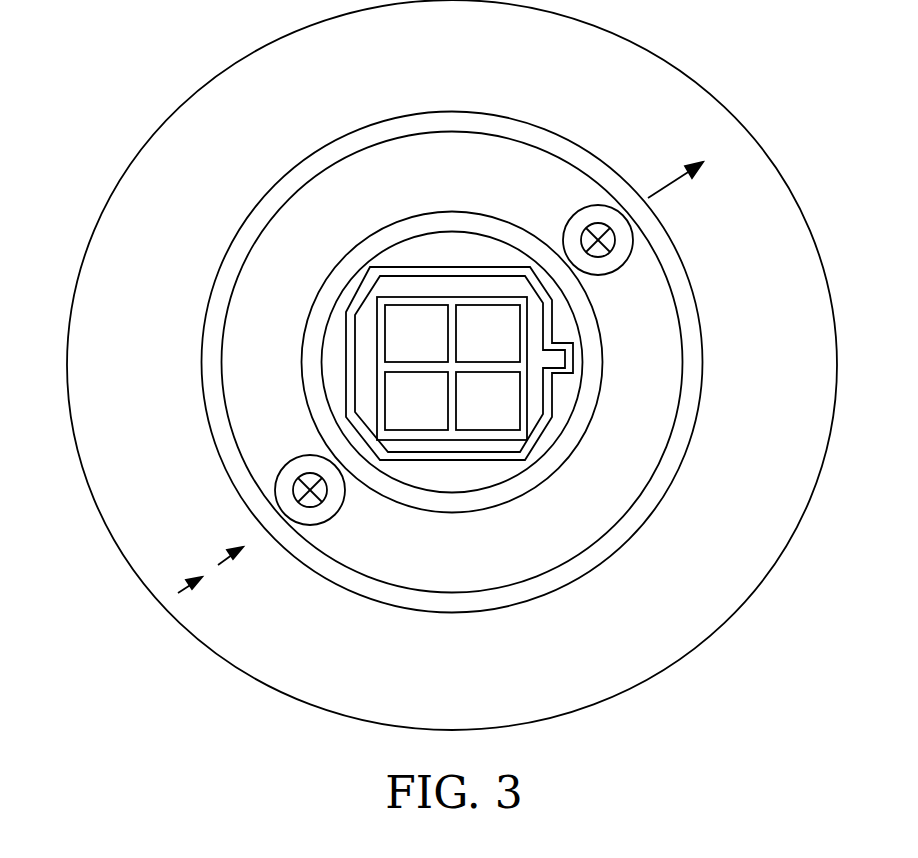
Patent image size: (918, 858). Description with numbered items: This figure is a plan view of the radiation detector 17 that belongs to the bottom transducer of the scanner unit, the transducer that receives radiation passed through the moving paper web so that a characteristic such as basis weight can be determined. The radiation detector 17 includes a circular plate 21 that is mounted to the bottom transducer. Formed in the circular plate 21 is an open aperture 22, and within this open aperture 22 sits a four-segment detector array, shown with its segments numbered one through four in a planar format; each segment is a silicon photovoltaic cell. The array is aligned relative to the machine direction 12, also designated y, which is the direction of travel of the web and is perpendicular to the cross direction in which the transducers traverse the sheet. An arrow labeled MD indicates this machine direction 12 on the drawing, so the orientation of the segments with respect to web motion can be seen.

The machine direction 12 is at (676, 186).
The radiation detector 17 is at (753, 622).
The circular plate 21 is at (118, 182).
The open aperture 22 is at (343, 290).